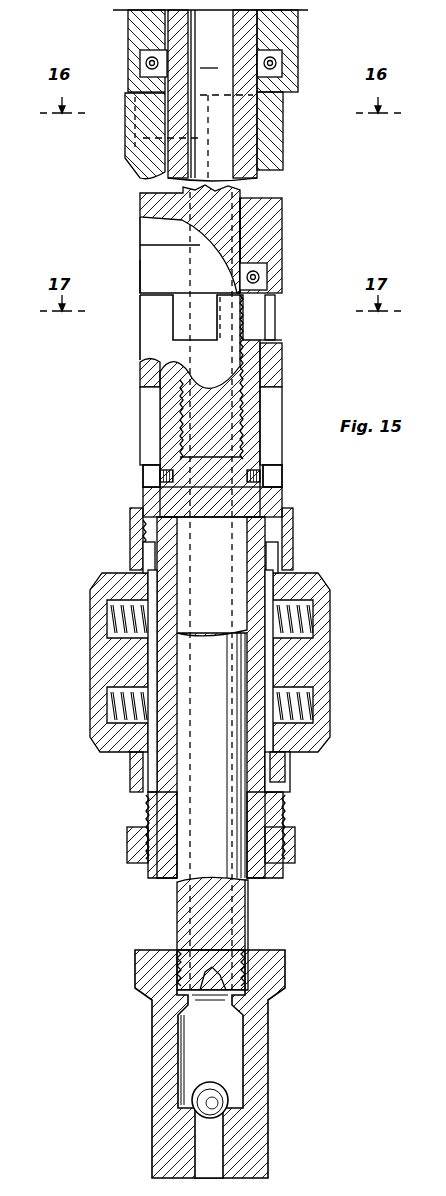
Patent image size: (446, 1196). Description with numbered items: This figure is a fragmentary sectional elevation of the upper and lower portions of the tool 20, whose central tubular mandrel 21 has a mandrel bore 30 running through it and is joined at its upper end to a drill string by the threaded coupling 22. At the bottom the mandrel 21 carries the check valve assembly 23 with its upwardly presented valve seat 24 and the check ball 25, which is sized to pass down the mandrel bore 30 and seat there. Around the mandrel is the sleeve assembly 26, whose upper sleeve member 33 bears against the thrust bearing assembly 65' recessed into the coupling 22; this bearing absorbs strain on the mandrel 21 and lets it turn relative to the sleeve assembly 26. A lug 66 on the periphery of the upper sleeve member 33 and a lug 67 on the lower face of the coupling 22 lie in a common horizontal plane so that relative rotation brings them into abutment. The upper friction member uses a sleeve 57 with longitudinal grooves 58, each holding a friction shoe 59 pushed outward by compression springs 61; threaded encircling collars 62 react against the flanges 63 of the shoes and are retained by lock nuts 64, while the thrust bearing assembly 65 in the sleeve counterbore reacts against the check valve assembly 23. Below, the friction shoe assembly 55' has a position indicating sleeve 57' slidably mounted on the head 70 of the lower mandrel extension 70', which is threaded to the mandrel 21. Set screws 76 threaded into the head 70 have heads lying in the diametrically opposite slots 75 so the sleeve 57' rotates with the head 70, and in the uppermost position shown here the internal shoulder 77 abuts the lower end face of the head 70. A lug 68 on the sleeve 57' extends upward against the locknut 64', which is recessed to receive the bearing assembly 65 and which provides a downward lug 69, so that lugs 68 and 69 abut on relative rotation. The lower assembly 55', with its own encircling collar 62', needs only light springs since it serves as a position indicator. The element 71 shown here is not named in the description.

The tool 20 is at (287, 367).
The mandrel 21 is at (232, 45).
The threaded coupling 22 is at (298, 18).
The check valve assembly 23 is at (150, 997).
The valve seat 24 is at (226, 1108).
The check ball 25 is at (211, 1084).
The sleeve assembly 26 is at (286, 113).
The mandrel bore 30 is at (318, 976).
The upper sleeve member 33 is at (288, 120).
The friction shoe assembly 55' is at (180, 647).
The sleeve 57 is at (245, 239).
The position indicating sleeve 57' is at (114, 373).
The longitudinal grooves 58 is at (152, 664).
The friction shoe 59 is at (120, 572).
The compression springs 61 is at (148, 715).
The threaded encircling collars 62 is at (100, 651).
The threaded encircling collar 62' is at (154, 255).
The flanges 63 is at (142, 762).
The lock nuts 64 is at (175, 835).
The locknut 64' is at (109, 266).
The thrust bearing assembly 65 is at (281, 276).
The thrust bearing assembly 65' is at (247, 60).
The lug 66 is at (125, 140).
The lug 67 is at (198, 136).
The lug 68 is at (140, 308).
The lug 69 is at (278, 326).
The head 70 is at (240, 586).
The lower mandrel extension 70' is at (285, 935).
The spacer 71 is at (276, 304).
The slots 75 is at (148, 432).
The set screws 76 is at (150, 472).
The internal shoulder 77 is at (290, 522).